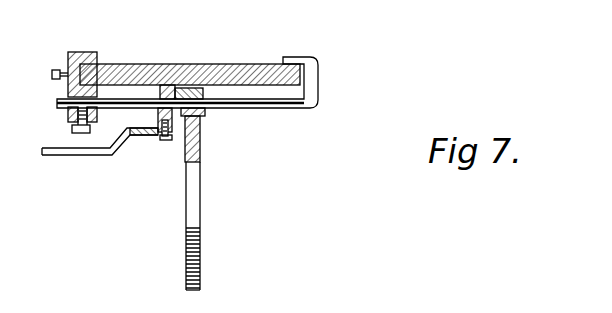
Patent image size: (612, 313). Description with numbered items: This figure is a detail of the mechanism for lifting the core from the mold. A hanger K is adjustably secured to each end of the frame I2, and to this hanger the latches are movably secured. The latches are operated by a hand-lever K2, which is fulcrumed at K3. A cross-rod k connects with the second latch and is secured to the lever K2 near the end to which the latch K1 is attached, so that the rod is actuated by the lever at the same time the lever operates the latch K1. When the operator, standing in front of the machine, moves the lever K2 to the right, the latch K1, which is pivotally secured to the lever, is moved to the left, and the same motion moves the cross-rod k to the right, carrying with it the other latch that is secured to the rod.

The cross-rod k is at (147, 125).
The frame I2 is at (181, 51).
The hanger K is at (251, 108).
The latch K1 is at (208, 198).
The hand-lever K2 is at (99, 153).
The fulcrum K3 is at (160, 142).